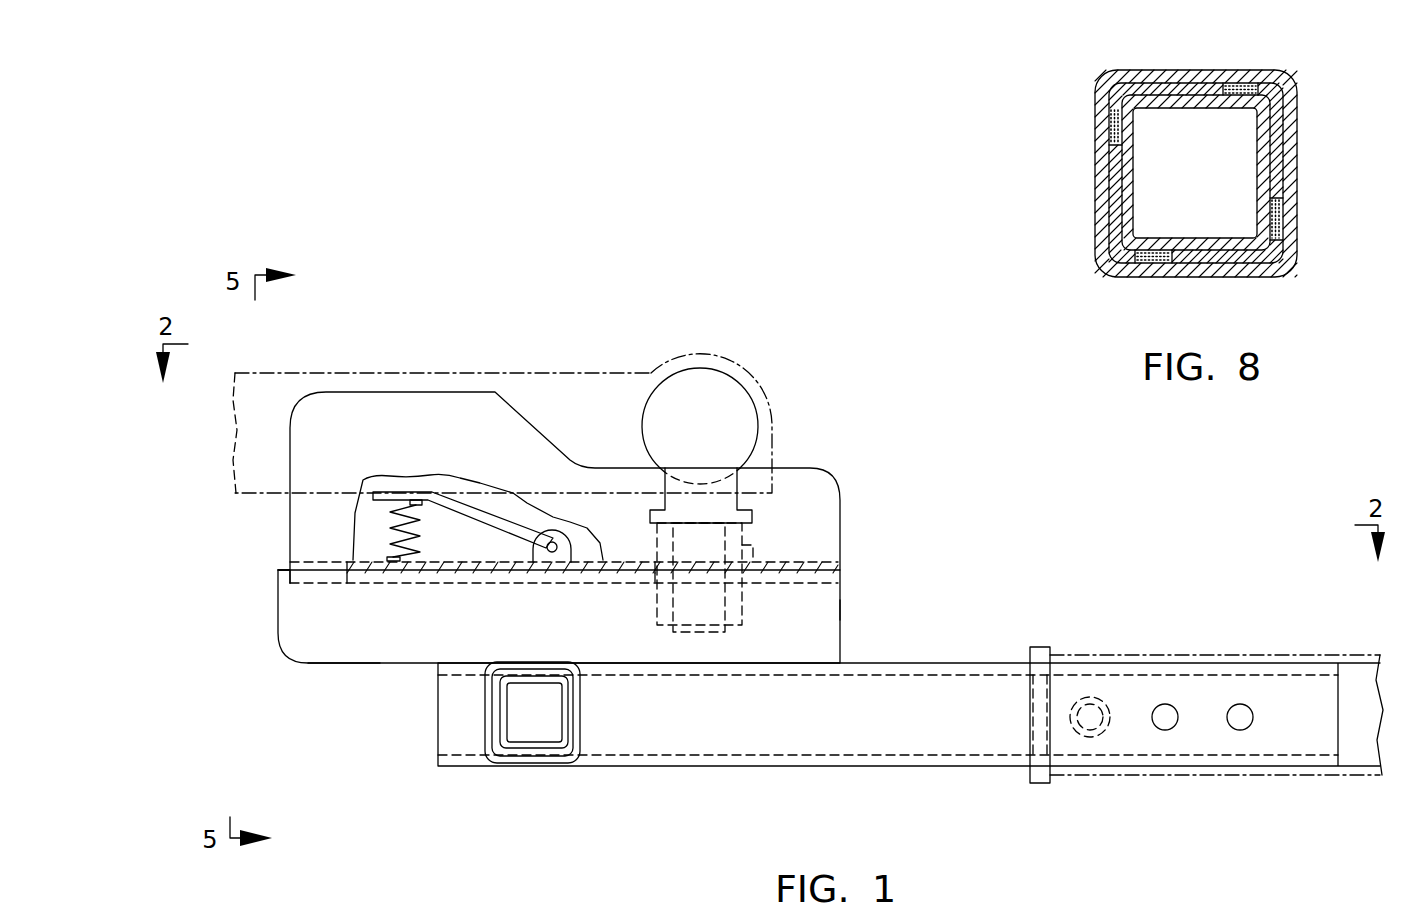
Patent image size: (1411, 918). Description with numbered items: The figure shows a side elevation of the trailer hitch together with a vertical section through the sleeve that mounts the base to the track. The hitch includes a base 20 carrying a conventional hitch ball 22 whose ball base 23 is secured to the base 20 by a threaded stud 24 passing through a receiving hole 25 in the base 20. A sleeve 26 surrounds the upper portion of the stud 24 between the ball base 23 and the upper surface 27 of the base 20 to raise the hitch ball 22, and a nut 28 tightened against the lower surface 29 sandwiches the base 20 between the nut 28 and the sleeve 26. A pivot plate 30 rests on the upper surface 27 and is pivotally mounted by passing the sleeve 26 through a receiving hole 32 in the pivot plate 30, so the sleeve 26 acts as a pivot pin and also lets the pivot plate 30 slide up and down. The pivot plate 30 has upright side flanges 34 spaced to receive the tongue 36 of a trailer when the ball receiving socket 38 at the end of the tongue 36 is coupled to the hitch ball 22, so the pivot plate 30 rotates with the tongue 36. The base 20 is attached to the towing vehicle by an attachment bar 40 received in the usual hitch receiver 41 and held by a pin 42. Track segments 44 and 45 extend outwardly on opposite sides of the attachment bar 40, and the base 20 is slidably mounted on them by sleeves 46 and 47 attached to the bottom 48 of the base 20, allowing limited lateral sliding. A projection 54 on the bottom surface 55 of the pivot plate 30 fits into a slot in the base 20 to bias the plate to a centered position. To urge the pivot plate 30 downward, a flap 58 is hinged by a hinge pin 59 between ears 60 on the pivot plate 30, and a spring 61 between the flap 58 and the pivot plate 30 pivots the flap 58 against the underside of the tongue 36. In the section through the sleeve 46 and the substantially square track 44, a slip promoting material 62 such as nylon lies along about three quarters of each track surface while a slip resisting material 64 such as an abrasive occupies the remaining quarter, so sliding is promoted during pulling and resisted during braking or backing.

In FIG. 1, the base 20 is at (825, 630).
In FIG. 1, the hitch ball 22 is at (735, 400).
In FIG. 1, the ball base 23 is at (657, 510).
In FIG. 1, the threaded stud 24 is at (740, 540).
In FIG. 1, the receiving hole 25 is at (657, 585).
In FIG. 1, the sleeve 26 is at (748, 552).
In FIG. 1, the upper surface 27 is at (820, 570).
In FIG. 1, the nut 28 is at (742, 605).
In FIG. 1, the lower surface 29 is at (830, 612).
In FIG. 1, the pivot plate 30 is at (300, 560).
In FIG. 1, the receiving hole 32 is at (655, 565).
In FIG. 1, the side flanges 34 is at (403, 397).
In FIG. 1, the tongue 36 is at (325, 373).
In FIG. 1, the ball receiving socket 38 is at (712, 357).
In FIG. 1, the attachment bar 40 is at (795, 768).
In FIG. 1, the hitch receiver 41 is at (1148, 655).
In FIG. 1, the pin 42 is at (1090, 740).
In FIG. 8, the track segment 44 is at (1260, 165).
In FIG. 1, the track segment 45 is at (563, 700).
In FIG. 8, the sleeve 46 is at (1145, 72).
In FIG. 1, the sleeve 47 is at (585, 730).
In FIG. 1, the bottom 48 is at (370, 657).
In FIG. 1, the projection 54 is at (325, 575).
In FIG. 1, the bottom surface 55 is at (420, 573).
In FIG. 1, the flap 58 is at (497, 535).
In FIG. 1, the hinge pin 59 is at (548, 556).
In FIG. 1, the ears 60 is at (570, 560).
In FIG. 1, the spring 61 is at (420, 535).
In FIG. 8, the slip promoting material 62 is at (1175, 85).
In FIG. 8, the slip resisting material 64 is at (1240, 85).